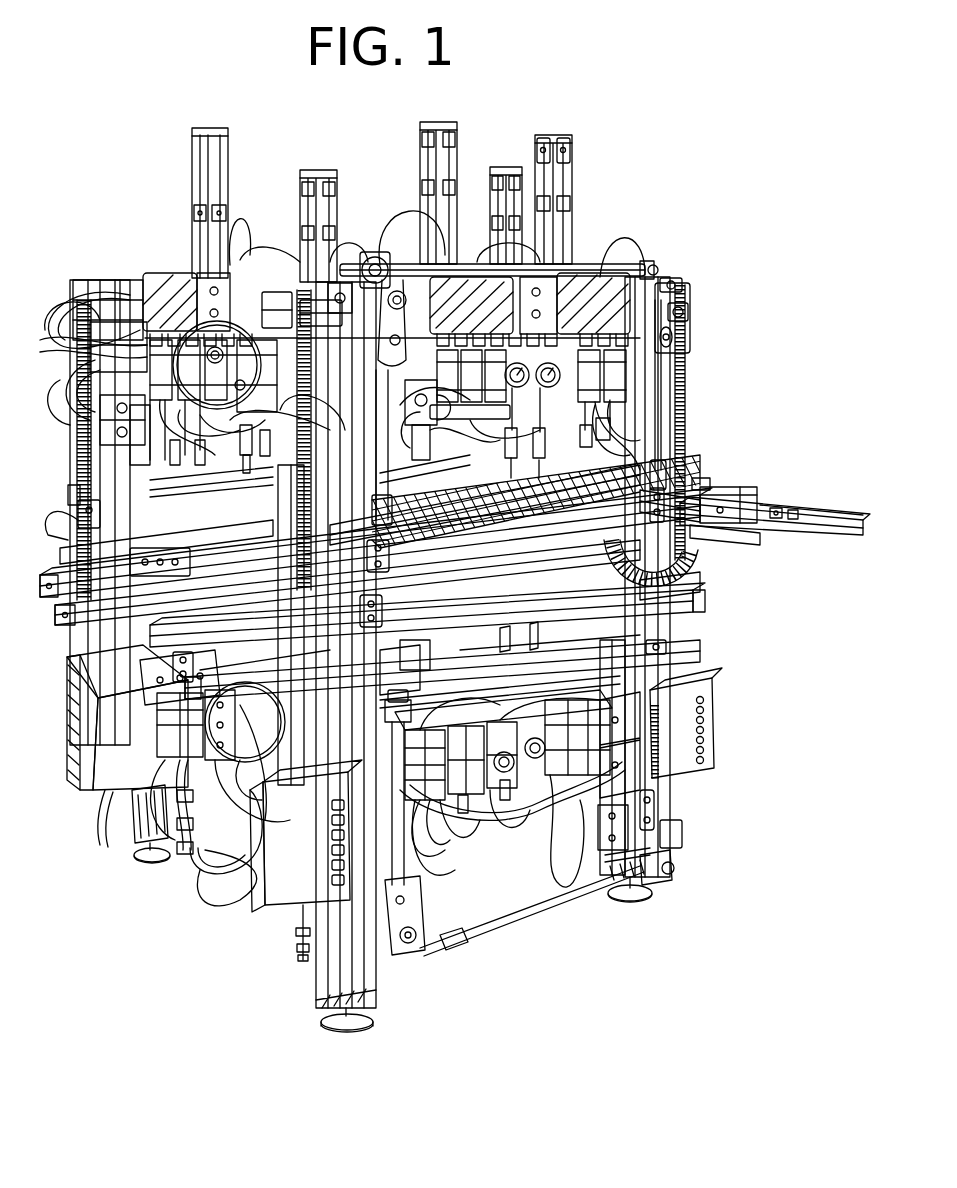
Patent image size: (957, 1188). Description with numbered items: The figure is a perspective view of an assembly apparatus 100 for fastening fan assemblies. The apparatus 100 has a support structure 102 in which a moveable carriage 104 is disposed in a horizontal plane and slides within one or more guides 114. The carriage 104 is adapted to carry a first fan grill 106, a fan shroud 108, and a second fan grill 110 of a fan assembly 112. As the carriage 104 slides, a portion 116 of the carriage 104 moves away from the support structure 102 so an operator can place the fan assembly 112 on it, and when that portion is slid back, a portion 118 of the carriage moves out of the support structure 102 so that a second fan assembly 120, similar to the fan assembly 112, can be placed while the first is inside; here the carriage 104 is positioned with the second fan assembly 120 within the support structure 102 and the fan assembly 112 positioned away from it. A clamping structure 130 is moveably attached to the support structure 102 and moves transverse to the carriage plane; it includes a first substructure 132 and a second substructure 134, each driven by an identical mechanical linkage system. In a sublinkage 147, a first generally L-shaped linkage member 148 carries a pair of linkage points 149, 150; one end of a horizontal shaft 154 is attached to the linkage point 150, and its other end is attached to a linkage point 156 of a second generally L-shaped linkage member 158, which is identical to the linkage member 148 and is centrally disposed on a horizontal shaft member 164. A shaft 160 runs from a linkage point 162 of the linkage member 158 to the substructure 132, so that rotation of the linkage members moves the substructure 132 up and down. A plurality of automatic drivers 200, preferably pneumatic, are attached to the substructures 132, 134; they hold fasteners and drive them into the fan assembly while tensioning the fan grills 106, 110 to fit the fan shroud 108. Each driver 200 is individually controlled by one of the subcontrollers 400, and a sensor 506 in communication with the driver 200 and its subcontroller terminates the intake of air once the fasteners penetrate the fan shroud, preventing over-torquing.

The assembly apparatus 100 is at (163, 168).
The support structure 102 is at (105, 408).
The moveable carriage 104 is at (190, 682).
The first fan grill 106 is at (745, 532).
The fan shroud 108 is at (762, 498).
The second fan grill 110 is at (688, 482).
The fan assembly 112 is at (752, 495).
The guides 114 is at (87, 517).
The portion of the carriage 116 is at (850, 530).
The portion of the carriage 118 is at (67, 582).
The second fan assembly 120 is at (150, 495).
The clamping structure 130 is at (655, 650).
The first substructure 132 is at (700, 478).
The second substructure 134 is at (695, 602).
The sublinkage 147 is at (645, 272).
The first generally L-shaped linkage member 148 is at (675, 312).
The linkage point 149 is at (668, 337).
The linkage point 150 is at (665, 285).
The horizontal shaft 154 is at (470, 262).
The linkage point 156 is at (410, 270).
The second generally L-shaped linkage member 158 is at (340, 283).
The shaft 160 is at (243, 463).
The linkage point 162 is at (348, 318).
The horizontal shaft member 164 is at (292, 316).
The automatic drivers 200 is at (560, 420).
The subcontrollers 400 is at (170, 283).
The sensor 506 is at (600, 376).